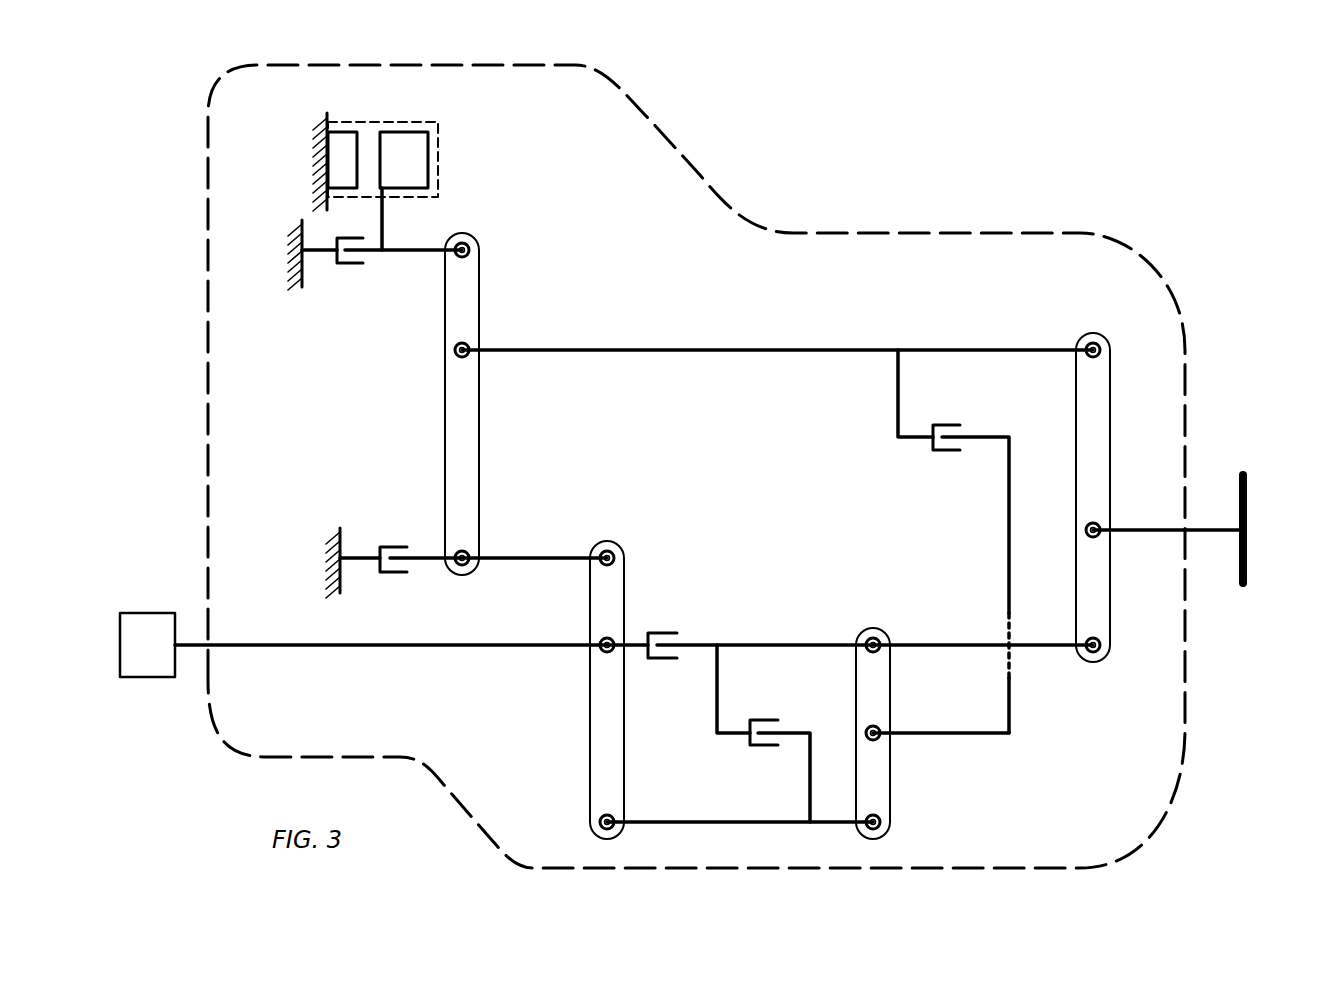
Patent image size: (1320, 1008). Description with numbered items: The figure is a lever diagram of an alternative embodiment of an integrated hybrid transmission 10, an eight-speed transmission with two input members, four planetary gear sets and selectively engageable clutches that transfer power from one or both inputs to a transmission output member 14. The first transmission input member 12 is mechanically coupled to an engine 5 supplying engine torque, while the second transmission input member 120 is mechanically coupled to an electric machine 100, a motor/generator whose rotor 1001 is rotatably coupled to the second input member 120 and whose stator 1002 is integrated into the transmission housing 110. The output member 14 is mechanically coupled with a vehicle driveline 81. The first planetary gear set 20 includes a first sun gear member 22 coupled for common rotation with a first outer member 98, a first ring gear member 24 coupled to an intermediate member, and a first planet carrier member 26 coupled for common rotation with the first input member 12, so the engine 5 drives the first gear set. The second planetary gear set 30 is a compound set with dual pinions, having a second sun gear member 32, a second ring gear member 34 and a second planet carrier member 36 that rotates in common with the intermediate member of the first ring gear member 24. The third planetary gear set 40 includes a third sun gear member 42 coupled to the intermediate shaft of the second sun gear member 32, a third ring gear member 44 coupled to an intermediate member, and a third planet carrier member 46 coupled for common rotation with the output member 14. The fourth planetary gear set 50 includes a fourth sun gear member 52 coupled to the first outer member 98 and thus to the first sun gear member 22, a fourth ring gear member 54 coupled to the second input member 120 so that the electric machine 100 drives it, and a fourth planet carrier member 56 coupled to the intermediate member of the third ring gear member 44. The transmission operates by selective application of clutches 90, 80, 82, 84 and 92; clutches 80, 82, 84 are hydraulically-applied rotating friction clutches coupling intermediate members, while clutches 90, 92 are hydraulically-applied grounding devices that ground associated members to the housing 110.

The integrated hybrid transmission 10 is at (937, 228).
The engine 5 is at (147, 645).
The first transmission input member 12 is at (440, 648).
The transmission output member 14 is at (1128, 528).
The first planetary gear set 20 is at (612, 535).
The first sun gear member 22 is at (615, 556).
The first ring gear member 24 is at (600, 815).
The first planet carrier member 26 is at (600, 652).
The second planetary gear set 30 is at (866, 625).
The second sun gear member 32 is at (882, 640).
The second ring gear member 34 is at (882, 738).
The second planet carrier member 36 is at (882, 828).
The third planetary gear set 40 is at (1082, 330).
The third sun gear member 42 is at (1100, 642).
The third ring gear member 44 is at (1100, 348).
The third planet carrier member 46 is at (1086, 527).
The fourth planetary gear set 50 is at (472, 232).
The fourth sun gear member 52 is at (468, 552).
The fourth ring gear member 54 is at (468, 257).
The fourth planet carrier member 56 is at (468, 357).
The clutch 80 is at (660, 632).
The vehicle driveline 81 is at (1247, 503).
The clutch 82 is at (760, 720).
The clutch 84 is at (950, 424).
The clutch 90 is at (390, 546).
The clutch 92 is at (348, 264).
The first outer member 98 is at (415, 565).
The electric machine 100 is at (338, 122).
The transmission housing 110 is at (296, 252).
The second transmission input member 120 is at (385, 222).
The rotor 1001 is at (410, 158).
The stator 1002 is at (345, 155).